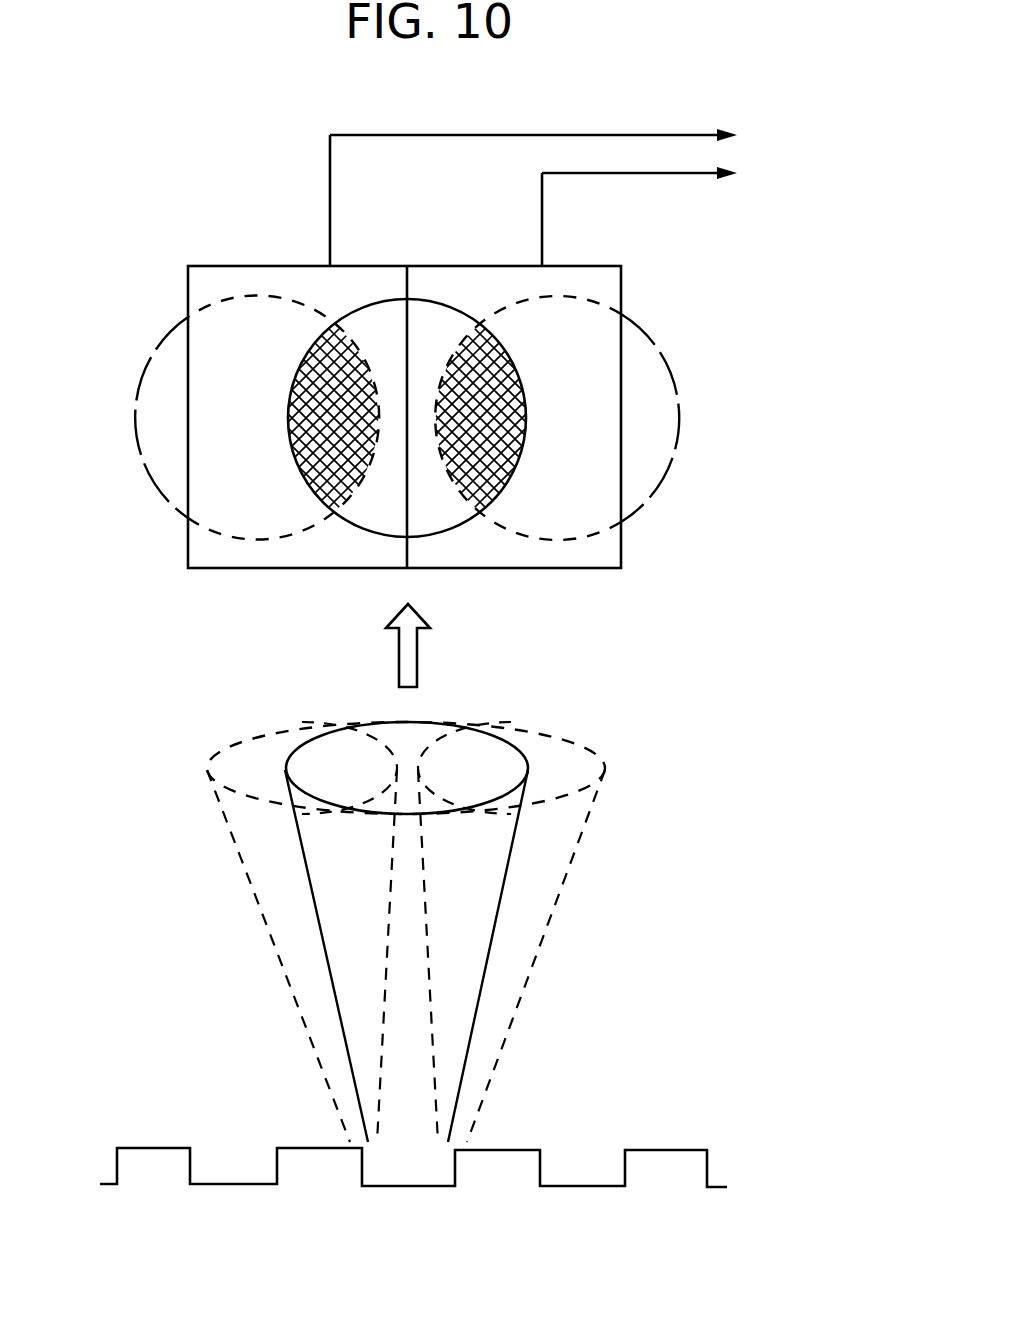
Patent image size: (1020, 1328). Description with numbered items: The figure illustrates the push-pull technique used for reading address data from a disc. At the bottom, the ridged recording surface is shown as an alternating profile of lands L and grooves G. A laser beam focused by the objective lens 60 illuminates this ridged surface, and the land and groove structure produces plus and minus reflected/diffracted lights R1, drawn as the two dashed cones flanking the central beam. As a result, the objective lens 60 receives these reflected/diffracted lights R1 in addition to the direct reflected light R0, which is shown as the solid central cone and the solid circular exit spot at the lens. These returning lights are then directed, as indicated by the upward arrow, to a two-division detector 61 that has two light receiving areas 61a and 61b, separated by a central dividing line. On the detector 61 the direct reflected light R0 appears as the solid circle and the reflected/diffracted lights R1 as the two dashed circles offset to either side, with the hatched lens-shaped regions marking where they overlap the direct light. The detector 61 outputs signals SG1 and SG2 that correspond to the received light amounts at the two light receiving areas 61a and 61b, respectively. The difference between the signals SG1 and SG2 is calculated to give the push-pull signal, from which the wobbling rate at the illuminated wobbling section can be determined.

The two-division detector 61 is at (184, 260).
The light receiving area 61a is at (240, 278).
The light receiving area 61b is at (567, 280).
The direct reflected light R0 is at (428, 314).
The reflected/diffracted lights R1 is at (212, 305).
The signal SG1 is at (583, 136).
The signal SG2 is at (689, 179).
The objective lens 60 is at (418, 737).
The land L is at (333, 1148).
The groove G is at (414, 1185).